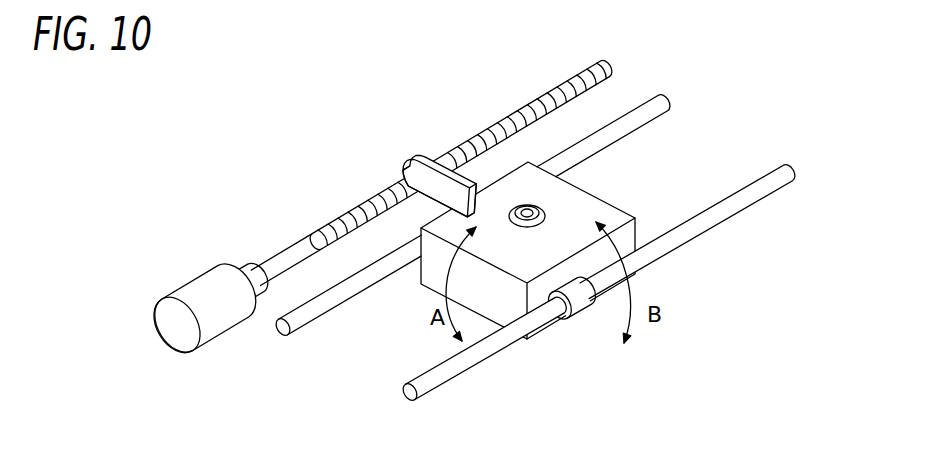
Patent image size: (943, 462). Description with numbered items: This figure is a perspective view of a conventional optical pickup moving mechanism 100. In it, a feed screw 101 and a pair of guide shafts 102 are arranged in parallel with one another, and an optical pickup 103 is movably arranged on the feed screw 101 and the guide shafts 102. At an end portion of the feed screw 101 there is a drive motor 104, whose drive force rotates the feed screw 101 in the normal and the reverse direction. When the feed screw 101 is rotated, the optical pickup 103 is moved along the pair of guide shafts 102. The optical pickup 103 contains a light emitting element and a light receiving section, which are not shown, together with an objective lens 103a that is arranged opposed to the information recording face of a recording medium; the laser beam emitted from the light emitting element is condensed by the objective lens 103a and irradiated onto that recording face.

The optical pickup moving mechanism 100 is at (519, 70).
The feed screw 101 is at (493, 128).
The guide shafts 102 is at (657, 118).
The optical pickup 103 is at (507, 317).
The objective lens 103a is at (537, 204).
The drive motor 104 is at (202, 290).